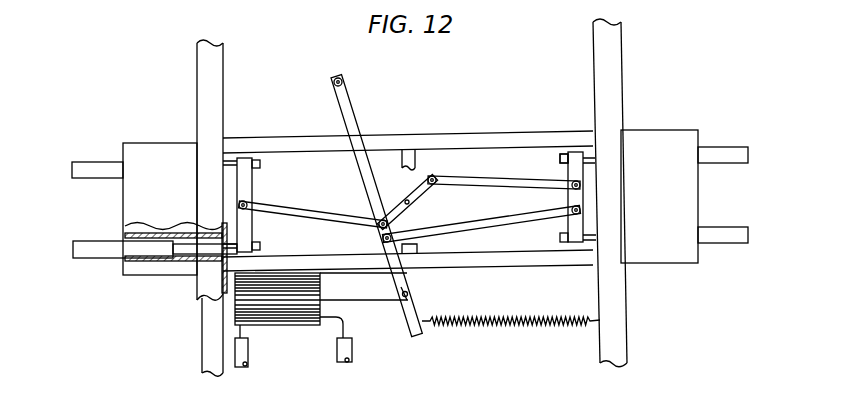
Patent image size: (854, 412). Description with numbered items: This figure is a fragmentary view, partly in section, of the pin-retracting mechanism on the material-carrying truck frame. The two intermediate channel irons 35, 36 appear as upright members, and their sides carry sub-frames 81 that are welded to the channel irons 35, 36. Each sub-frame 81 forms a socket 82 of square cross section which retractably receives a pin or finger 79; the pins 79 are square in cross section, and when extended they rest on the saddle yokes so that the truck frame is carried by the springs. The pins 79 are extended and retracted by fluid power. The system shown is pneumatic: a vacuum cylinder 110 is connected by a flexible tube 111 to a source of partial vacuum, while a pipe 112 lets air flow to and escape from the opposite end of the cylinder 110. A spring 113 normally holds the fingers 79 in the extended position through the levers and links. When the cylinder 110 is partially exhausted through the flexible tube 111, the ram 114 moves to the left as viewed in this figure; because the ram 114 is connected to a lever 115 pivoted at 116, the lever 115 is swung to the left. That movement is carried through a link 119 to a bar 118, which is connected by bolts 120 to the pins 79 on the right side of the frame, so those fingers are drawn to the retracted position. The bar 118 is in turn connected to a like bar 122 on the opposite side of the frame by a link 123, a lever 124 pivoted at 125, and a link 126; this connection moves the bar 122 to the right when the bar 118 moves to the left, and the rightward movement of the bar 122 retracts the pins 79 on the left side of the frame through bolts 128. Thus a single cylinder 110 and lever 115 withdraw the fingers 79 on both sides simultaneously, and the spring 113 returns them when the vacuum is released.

The channel iron 35 is at (200, 366).
The channel iron 36 is at (618, 342).
The pin 79 is at (77, 170).
The sub-frame 81 is at (163, 152).
The socket 82 is at (182, 264).
The vacuum cylinder 110 is at (286, 312).
The flexible tube 111 is at (247, 334).
The pipe 112 is at (348, 325).
The spring 113 is at (492, 326).
The ram 114 is at (342, 289).
The lever 115 is at (353, 118).
The pivot 116 is at (345, 80).
The bar 118 is at (559, 158).
The link 119 is at (506, 224).
The bolt 120 is at (584, 167).
The bar 122 is at (250, 178).
The link 123 is at (533, 181).
The lever 124 is at (426, 188).
The pivot 125 is at (390, 228).
The link 126 is at (313, 210).
The bolt 128 is at (228, 148).